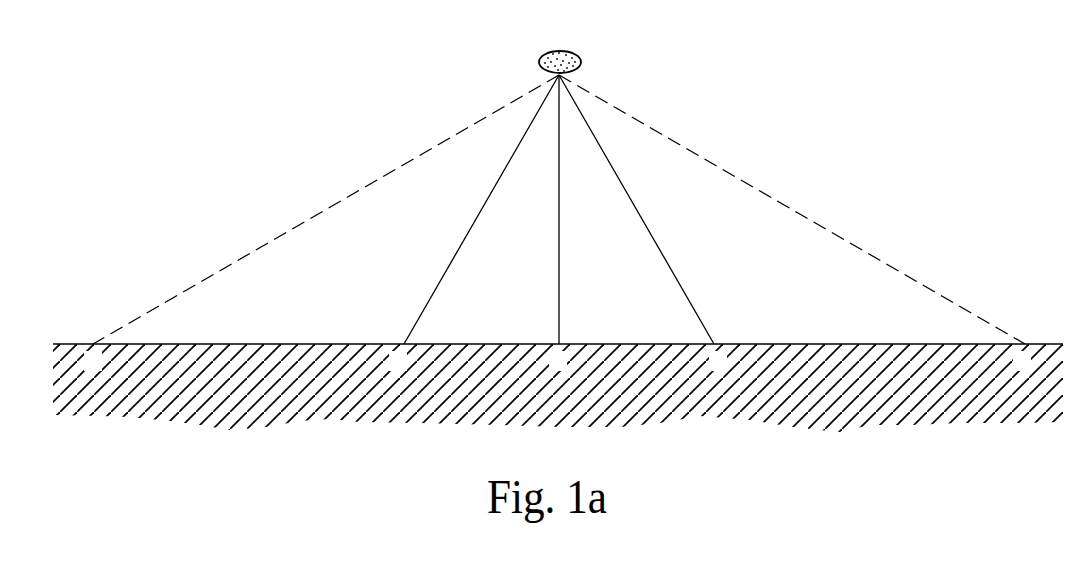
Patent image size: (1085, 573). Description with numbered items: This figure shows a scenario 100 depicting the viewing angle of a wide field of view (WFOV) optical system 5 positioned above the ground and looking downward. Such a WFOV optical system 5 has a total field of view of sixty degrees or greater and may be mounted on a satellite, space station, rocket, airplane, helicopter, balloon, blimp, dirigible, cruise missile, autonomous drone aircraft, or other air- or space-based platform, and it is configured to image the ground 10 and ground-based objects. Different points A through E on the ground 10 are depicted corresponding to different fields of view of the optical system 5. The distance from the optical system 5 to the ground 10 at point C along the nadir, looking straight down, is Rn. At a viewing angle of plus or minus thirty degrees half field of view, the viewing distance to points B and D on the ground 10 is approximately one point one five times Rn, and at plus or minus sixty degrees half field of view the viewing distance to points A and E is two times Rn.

The scenario 100 is at (218, 64).
The WFOV optical system 5 is at (540, 62).
The ground 10 is at (628, 393).